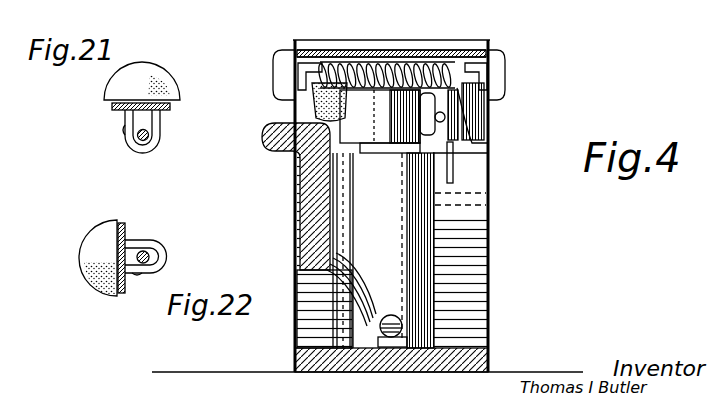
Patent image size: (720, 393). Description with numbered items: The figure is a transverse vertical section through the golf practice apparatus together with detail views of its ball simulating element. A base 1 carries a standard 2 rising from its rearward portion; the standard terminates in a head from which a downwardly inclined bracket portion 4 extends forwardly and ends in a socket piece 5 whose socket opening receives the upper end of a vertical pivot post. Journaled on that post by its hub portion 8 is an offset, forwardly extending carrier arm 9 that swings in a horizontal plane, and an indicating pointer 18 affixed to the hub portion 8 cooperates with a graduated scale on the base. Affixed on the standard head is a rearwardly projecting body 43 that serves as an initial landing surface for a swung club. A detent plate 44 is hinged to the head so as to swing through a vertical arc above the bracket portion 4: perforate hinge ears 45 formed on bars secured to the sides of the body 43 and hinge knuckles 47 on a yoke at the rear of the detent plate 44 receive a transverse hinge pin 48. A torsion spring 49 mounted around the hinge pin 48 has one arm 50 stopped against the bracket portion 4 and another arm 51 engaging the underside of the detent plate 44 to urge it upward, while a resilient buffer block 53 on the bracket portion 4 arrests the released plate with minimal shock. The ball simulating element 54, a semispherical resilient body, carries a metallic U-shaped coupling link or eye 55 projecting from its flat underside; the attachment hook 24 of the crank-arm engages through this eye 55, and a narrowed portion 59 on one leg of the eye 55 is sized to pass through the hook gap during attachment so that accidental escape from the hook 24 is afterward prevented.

In FIG. 4, the base 1 is at (450, 357).
In FIG. 4, the standard 2 is at (488, 184).
In FIG. 4, the bracket portion 4 is at (472, 125).
In FIG. 4, the socket piece 5 is at (375, 122).
In FIG. 4, the hub portion 8 is at (422, 245).
In FIG. 4, the carrier arm 9 is at (308, 195).
In FIG. 4, the indicating pointer 18 is at (382, 6).
In FIG. 21, the attachment hook 24 is at (142, 147).
In FIG. 22, the attachment hook 24 is at (167, 256).
In FIG. 4, the body 43 is at (437, 40).
In FIG. 4, the detent plate 44 is at (330, 51).
In FIG. 4, the hinge ears 45 is at (288, 55).
In FIG. 4, the hinge knuckles 47 is at (300, 82).
In FIG. 4, the hinge pin 48 is at (466, 64).
In FIG. 4, the torsion spring 49 is at (395, 70).
In FIG. 4, the spring arm 50 is at (453, 160).
In FIG. 4, the spring arm 51 is at (380, 65).
In FIG. 4, the buffer block 53 is at (312, 110).
In FIG. 21, the ball simulating element 54 is at (157, 82).
In FIG. 22, the ball simulating element 54 is at (94, 237).
In FIG. 21, the coupling link or eye 55 is at (160, 126).
In FIG. 22, the coupling link or eye 55 is at (140, 243).
In FIG. 21, the narrowed portion 59 is at (124, 131).
In FIG. 22, the narrowed portion 59 is at (137, 274).